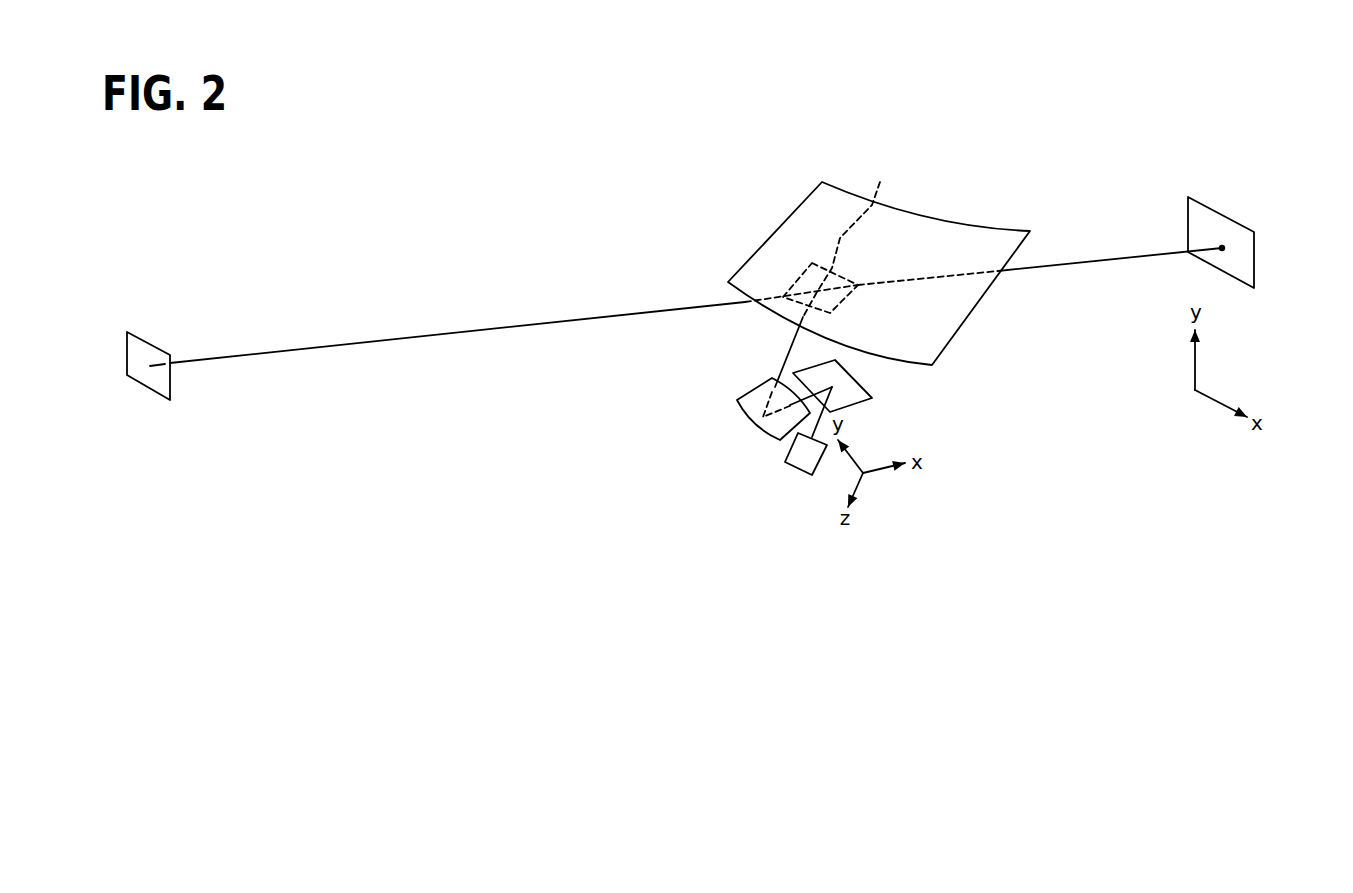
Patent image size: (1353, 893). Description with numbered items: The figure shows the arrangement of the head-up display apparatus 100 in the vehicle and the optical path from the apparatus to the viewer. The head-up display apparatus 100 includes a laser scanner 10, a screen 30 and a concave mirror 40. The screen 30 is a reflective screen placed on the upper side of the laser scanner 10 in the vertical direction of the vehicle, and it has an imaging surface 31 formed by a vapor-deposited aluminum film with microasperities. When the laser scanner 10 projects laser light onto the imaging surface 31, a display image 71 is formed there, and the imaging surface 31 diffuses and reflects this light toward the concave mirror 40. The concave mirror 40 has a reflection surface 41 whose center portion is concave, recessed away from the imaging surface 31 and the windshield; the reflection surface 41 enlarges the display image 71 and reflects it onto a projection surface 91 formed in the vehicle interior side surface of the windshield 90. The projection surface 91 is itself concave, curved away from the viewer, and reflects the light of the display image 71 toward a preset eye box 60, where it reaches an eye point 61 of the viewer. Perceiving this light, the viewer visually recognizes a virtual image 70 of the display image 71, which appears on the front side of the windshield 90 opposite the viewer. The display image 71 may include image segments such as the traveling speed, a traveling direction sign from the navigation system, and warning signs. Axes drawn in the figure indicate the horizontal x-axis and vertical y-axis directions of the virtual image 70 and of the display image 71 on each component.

The laser scanner 10 is at (797, 468).
The screen 30 is at (853, 378).
The imaging surface 31 is at (845, 389).
The concave mirror 40 is at (742, 417).
The reflection surface 41 is at (743, 394).
The eye box 60 is at (1208, 205).
The eye point 61 is at (1222, 248).
The virtual image 70 is at (142, 385).
The display image 71 is at (826, 376).
The windshield 90 is at (956, 223).
The projection surface 91 is at (838, 235).
The head-up display apparatus 100 is at (762, 446).